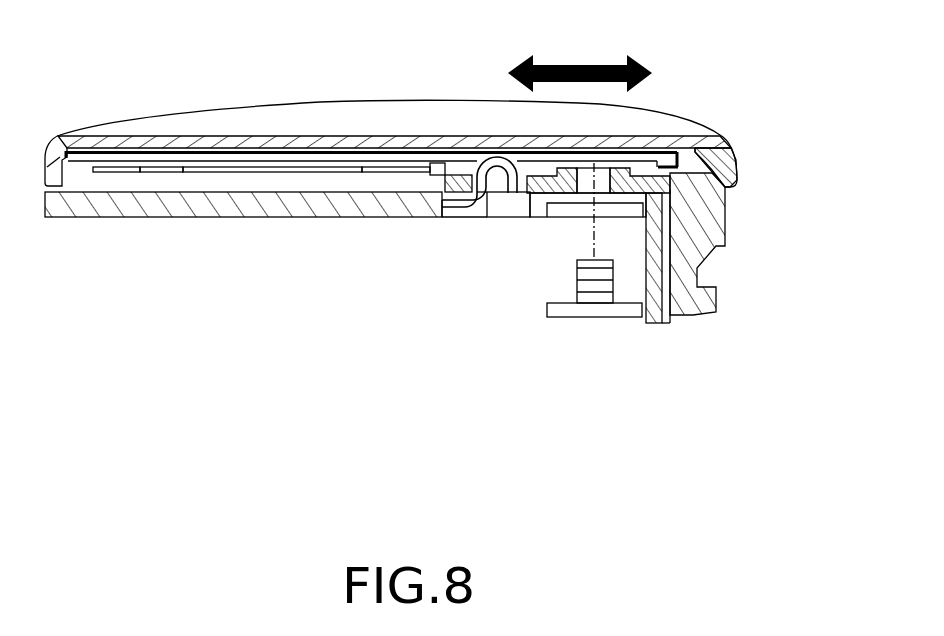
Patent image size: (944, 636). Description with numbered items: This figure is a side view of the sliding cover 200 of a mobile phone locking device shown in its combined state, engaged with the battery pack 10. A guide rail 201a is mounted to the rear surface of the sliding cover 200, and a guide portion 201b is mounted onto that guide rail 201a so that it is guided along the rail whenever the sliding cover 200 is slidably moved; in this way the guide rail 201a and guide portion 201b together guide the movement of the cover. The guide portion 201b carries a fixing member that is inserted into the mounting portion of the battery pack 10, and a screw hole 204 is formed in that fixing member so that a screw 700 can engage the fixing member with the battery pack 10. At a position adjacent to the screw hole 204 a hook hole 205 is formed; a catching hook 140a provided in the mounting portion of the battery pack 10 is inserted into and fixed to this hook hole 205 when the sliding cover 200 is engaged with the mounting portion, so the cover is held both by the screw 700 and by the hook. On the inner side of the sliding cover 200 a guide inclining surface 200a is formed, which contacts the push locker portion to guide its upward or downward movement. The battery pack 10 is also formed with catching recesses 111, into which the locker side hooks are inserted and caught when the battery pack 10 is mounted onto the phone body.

The battery pack 10 is at (110, 210).
The catching recesses 111 is at (700, 268).
The catching hook 140a is at (500, 157).
The sliding cover 200 is at (391, 112).
The guide inclining surface 200a is at (738, 157).
The guide rail 201a is at (117, 158).
The guide portion 201b is at (452, 185).
The screw hole 204 is at (673, 190).
The hook hole 205 is at (498, 195).
The screw 700 is at (597, 318).